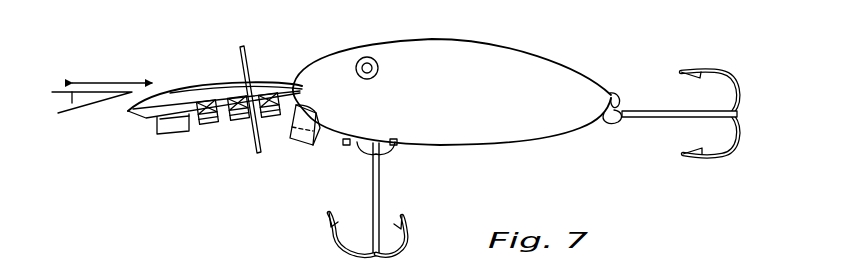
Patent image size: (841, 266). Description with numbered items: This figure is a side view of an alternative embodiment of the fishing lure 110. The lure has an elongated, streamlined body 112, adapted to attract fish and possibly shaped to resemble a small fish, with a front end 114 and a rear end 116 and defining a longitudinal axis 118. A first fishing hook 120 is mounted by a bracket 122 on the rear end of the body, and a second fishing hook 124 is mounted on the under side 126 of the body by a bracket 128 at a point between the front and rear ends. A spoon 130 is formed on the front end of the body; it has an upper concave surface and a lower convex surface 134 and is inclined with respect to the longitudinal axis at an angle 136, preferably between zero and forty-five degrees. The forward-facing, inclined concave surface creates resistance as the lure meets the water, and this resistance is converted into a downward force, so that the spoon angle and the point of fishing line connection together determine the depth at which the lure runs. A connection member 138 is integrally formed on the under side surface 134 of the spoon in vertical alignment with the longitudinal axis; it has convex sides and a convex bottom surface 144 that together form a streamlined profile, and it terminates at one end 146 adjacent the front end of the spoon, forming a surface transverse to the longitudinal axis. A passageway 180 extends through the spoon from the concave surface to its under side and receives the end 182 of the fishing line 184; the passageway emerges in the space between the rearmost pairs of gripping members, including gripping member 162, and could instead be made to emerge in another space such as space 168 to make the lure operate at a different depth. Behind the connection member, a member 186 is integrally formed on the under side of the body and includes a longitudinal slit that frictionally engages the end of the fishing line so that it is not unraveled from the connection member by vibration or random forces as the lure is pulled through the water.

The fishing lure 110 is at (458, 40).
The body 112 is at (523, 62).
The front end 114 is at (296, 62).
The rear end 116 is at (620, 100).
The longitudinal axis 118 is at (111, 75).
The first fishing hook 120 is at (692, 116).
The bracket 122 is at (608, 126).
The second fishing hook 124 is at (379, 180).
The under side 126 is at (522, 143).
The bracket 128 is at (386, 150).
The spoon 130 is at (195, 89).
The lower convex surface 134 is at (143, 116).
The angle 136 is at (73, 103).
The connection member 138 is at (192, 137).
The convex bottom surface 144 is at (238, 128).
The end of connection member 146 is at (153, 135).
The gripping member 162 is at (271, 260).
The space 168 is at (200, 260).
The passageway 180 is at (253, 103).
The end of fishing line 182 is at (260, 153).
The fishing line 184 is at (240, 49).
The member 186 is at (303, 147).